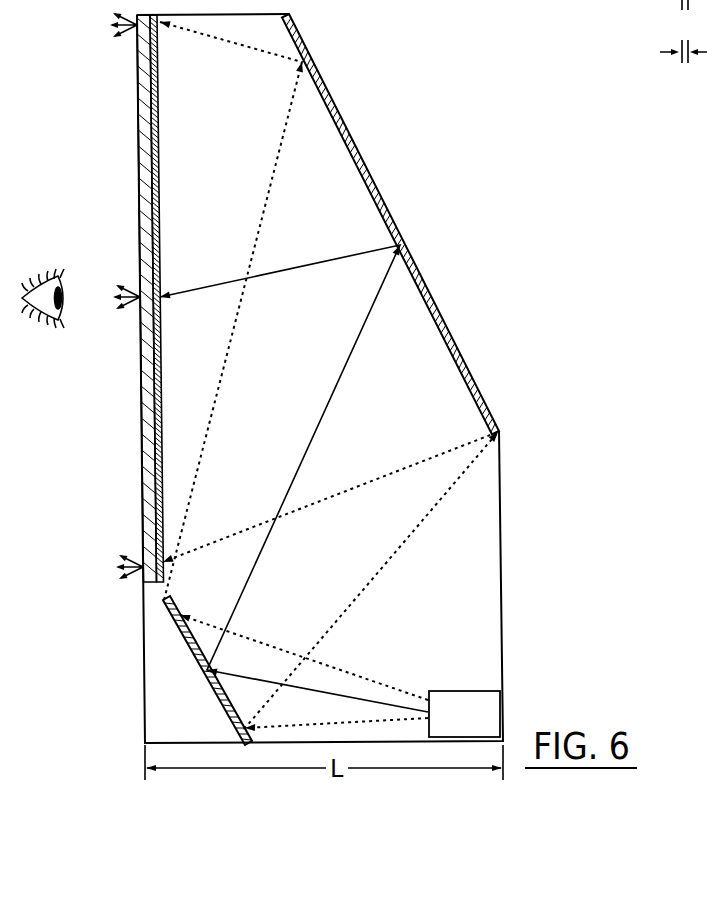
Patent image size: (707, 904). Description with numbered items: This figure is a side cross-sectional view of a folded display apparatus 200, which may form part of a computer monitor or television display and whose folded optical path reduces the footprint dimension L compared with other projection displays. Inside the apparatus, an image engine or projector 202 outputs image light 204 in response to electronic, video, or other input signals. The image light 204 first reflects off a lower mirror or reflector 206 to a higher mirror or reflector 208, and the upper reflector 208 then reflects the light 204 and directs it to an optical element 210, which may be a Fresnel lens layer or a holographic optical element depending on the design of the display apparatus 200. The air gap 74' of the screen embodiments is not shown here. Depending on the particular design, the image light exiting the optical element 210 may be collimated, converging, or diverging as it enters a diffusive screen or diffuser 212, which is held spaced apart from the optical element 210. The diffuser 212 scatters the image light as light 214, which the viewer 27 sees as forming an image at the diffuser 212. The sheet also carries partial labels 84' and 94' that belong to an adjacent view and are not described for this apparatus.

The display apparatus 200 is at (428, 130).
The image engine 202 is at (481, 725).
The image light 204 is at (400, 684).
The lower mirror 206 is at (222, 712).
The upper mirror 208 is at (471, 381).
The optical element 210 is at (158, 148).
The diffuser 212 is at (140, 178).
The scattered light 214 is at (133, 32).
The viewer 27 is at (62, 272).
The air gap 74' is at (571, 61).
The partial reference from adjacent figure 84' is at (648, 15).
The partial reference from adjacent figure 94' is at (666, 54).